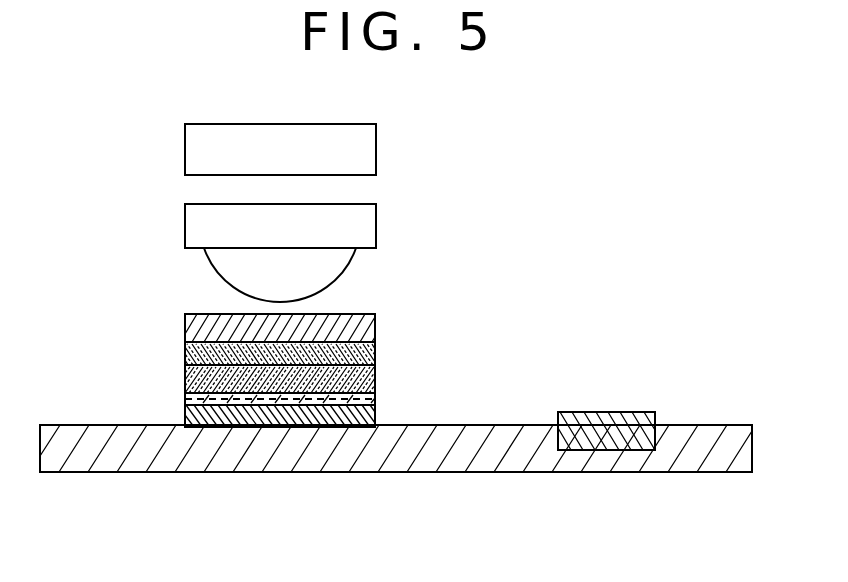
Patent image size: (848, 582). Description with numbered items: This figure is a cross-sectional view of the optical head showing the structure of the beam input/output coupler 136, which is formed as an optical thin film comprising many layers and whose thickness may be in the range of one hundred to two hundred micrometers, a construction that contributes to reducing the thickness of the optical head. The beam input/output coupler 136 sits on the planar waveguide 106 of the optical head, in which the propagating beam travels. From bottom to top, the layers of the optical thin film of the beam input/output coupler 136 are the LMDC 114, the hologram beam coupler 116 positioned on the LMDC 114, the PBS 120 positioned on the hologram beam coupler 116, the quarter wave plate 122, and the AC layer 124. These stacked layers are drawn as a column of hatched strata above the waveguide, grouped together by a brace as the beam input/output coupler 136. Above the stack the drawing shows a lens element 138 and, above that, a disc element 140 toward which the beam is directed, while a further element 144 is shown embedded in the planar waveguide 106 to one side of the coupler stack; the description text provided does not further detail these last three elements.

The disc 140 is at (376, 152).
The objective lens 138 is at (376, 230).
The beam input/output coupler 136 is at (364, 355).
The AC layer 124 is at (375, 322).
The quarter wave plate 122 is at (375, 350).
The PBS 120 is at (375, 376).
The hologram beam coupler 116 is at (375, 399).
The LMDC 114 is at (328, 413).
The photodetector 144 is at (608, 440).
The planar waveguide 106 is at (700, 462).